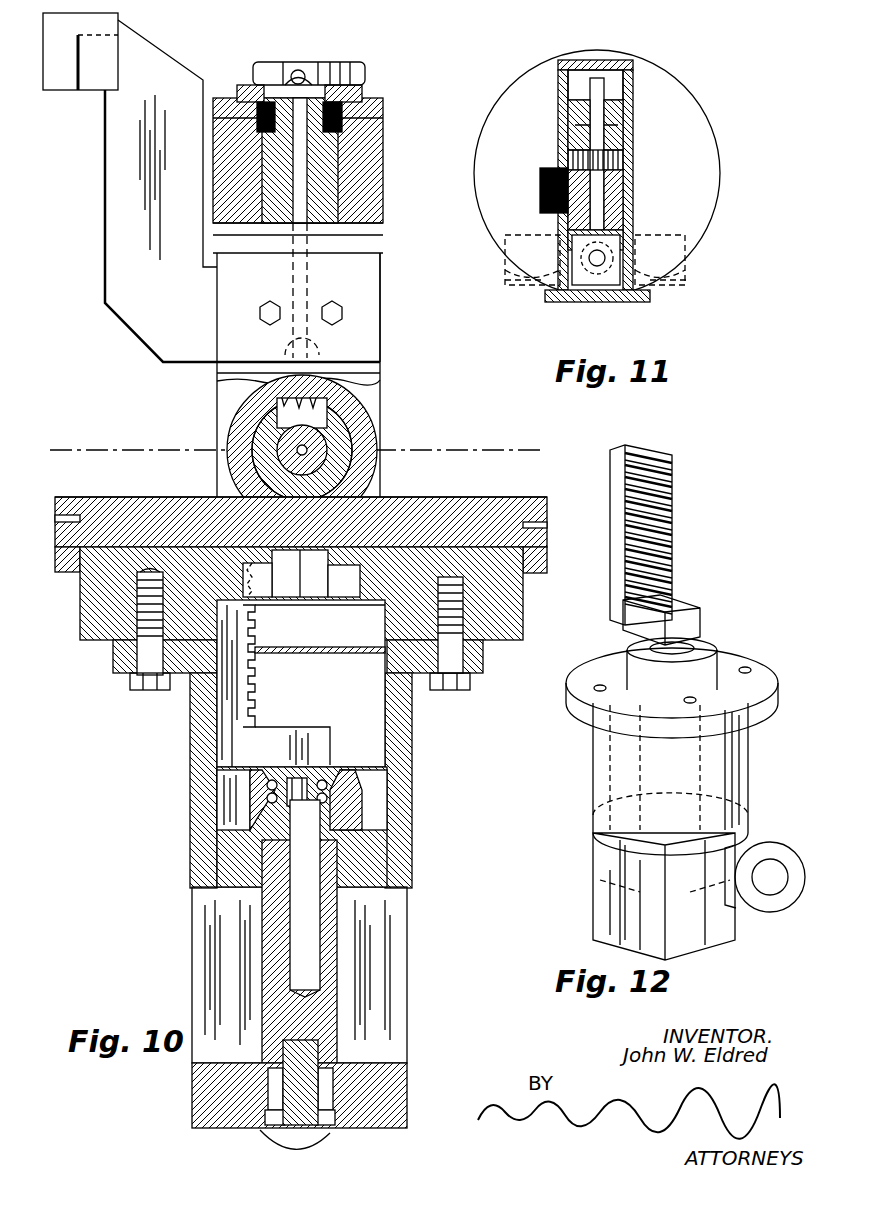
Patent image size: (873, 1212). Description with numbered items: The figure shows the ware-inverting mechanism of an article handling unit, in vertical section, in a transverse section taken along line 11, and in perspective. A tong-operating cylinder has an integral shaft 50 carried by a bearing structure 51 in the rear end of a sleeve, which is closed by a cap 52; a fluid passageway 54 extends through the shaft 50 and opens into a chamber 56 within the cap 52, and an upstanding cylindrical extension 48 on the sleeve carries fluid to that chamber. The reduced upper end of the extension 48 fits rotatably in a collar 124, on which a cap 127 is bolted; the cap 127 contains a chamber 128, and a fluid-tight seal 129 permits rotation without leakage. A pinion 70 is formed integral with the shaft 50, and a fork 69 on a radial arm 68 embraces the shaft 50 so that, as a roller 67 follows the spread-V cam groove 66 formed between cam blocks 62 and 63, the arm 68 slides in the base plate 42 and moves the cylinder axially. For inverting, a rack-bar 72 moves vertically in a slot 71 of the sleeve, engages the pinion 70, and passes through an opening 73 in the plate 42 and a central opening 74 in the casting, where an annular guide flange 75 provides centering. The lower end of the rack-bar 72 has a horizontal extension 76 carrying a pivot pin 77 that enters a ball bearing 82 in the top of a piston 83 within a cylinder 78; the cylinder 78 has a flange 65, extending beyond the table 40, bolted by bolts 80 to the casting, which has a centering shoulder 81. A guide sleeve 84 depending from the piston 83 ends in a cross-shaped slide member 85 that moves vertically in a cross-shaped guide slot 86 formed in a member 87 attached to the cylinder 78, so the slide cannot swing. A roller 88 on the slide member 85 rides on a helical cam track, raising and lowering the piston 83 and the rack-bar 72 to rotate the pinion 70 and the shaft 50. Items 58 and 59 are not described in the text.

In FIG. 10, the section line 11— 11 is at (61, 434).
In FIG. 10, the table 40 is at (515, 603).
In FIG. 10, the base plate 42 is at (490, 497).
In FIG. 11, the base plate 42 is at (700, 185).
In FIG. 10, the cylindrical extension 48 is at (380, 398).
In FIG. 10, the shaft portion 50 is at (328, 462).
In FIG. 11, the shaft portion 50 is at (633, 108).
In FIG. 11, the bearing structure 51 is at (558, 132).
In FIG. 11, the cap 52 is at (633, 64).
In FIG. 11, the fluid passageway 54 is at (633, 165).
In FIG. 11, the chamber 56 is at (580, 92).
In FIG. 10, the arm bracket 58 is at (188, 263).
In FIG. 10, the bolts 59 is at (268, 312).
In FIG. 11, the cam block 62 is at (545, 290).
In FIG. 11, the cam block 63 is at (650, 242).
In FIG. 10, the flange 65 is at (113, 658).
In FIG. 12, the flange 65 is at (575, 700).
In FIG. 11, the cam groove 66 is at (520, 250).
In FIG. 11, the roller 67 is at (605, 258).
In FIG. 10, the arm 68 is at (310, 555).
In FIG. 10, the fork 69 is at (352, 428).
In FIG. 11, the fork 69 is at (633, 212).
In FIG. 10, the pinion 70 is at (302, 413).
In FIG. 11, the pinion 70 is at (623, 183).
In FIG. 10, the vertical slot 71 is at (235, 396).
In FIG. 11, the rack-bar 72 is at (540, 186).
In FIG. 12, the rack-bar 72 is at (672, 516).
In FIG. 10, the opening 73 is at (192, 497).
In FIG. 10, the central opening 74 is at (258, 568).
In FIG. 10, the annular guide flange 75 is at (380, 580).
In FIG. 10, the horizontal extension 76 is at (312, 733).
In FIG. 12, the horizontal extension 76 is at (672, 600).
In FIG. 10, the pivot pin 77 is at (292, 775).
In FIG. 10, the cylinder 78 is at (412, 758).
In FIG. 12, the cylinder 78 is at (593, 742).
In FIG. 10, the bolts 80 is at (150, 690).
In FIG. 10, the centering shoulder 81 is at (385, 646).
In FIG. 10, the ball bearing 82 is at (330, 775).
In FIG. 10, the piston 83 is at (405, 845).
In FIG. 12, the piston 83 is at (710, 665).
In FIG. 10, the guide sleeve 84 is at (340, 972).
In FIG. 10, the cross-shaped slide member 85 is at (390, 1078).
In FIG. 12, the cross-shaped guide slot 86 is at (600, 893).
In FIG. 12, the member 87 is at (593, 855).
In FIG. 10, the roller 88 is at (305, 1140).
In FIG. 12, the roller 88 is at (770, 895).
In FIG. 10, the collar 124 is at (360, 152).
In FIG. 10, the cap 127 is at (362, 68).
In FIG. 10, the chamber 128 is at (322, 85).
In FIG. 10, the fluid-tight seal 129 is at (342, 105).